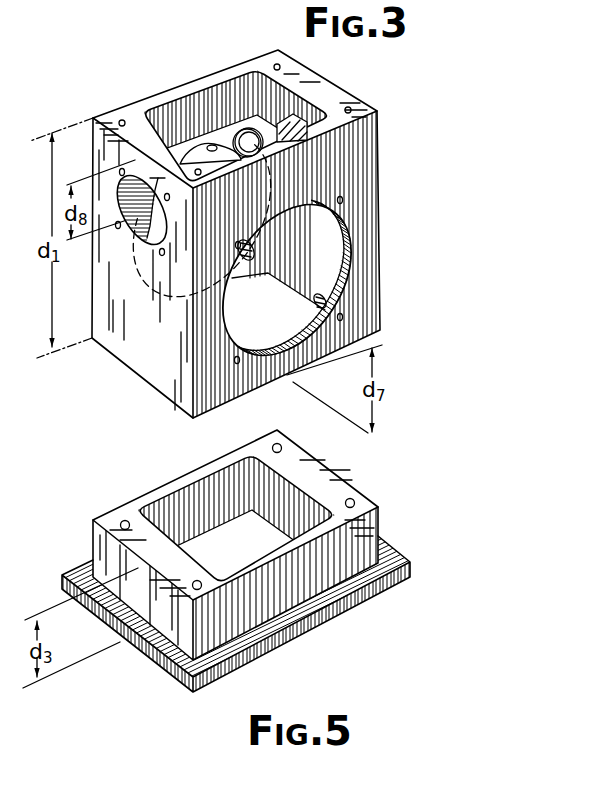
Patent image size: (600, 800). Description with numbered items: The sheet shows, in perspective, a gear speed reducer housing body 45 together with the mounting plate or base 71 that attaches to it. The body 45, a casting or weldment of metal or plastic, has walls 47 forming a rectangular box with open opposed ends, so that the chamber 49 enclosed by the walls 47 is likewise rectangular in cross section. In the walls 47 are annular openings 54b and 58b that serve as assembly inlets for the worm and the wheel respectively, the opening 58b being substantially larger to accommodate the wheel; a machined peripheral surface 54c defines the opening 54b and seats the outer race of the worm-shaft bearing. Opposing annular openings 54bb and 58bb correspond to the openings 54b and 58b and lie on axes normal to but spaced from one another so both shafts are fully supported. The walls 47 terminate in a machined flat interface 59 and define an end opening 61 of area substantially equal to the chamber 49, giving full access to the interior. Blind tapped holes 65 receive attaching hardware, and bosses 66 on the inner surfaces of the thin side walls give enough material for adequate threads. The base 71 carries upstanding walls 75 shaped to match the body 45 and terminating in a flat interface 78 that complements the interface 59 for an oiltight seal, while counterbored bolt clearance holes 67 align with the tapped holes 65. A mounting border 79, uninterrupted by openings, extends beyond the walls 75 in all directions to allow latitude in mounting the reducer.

In FIG. 3, the body 45 is at (182, 72).
In FIG. 3, the walls 47 is at (148, 347).
In FIG. 3, the chamber 49 is at (320, 222).
In FIG. 3, the annular opening 54b is at (128, 233).
In FIG. 3, the annular opening 54bb is at (292, 117).
In FIG. 3, the peripheral surface 54c is at (165, 288).
In FIG. 3, the annular opening 58b is at (325, 273).
In FIG. 3, the annular opening 58bb is at (207, 150).
In FIG. 3, the interface 59 is at (313, 87).
In FIG. 3, the opening 61 is at (238, 62).
In FIG. 3, the blind tapped holes 65 is at (120, 120).
In FIG. 3, the bosses 66 is at (214, 146).
In FIG. 5, the bolt clearance holes 67 is at (125, 520).
In FIG. 5, the base 71 is at (238, 577).
In FIG. 5, the upstanding walls 75 is at (358, 532).
In FIG. 5, the flat interface 78 is at (338, 490).
In FIG. 5, the mounting border 79 is at (176, 657).